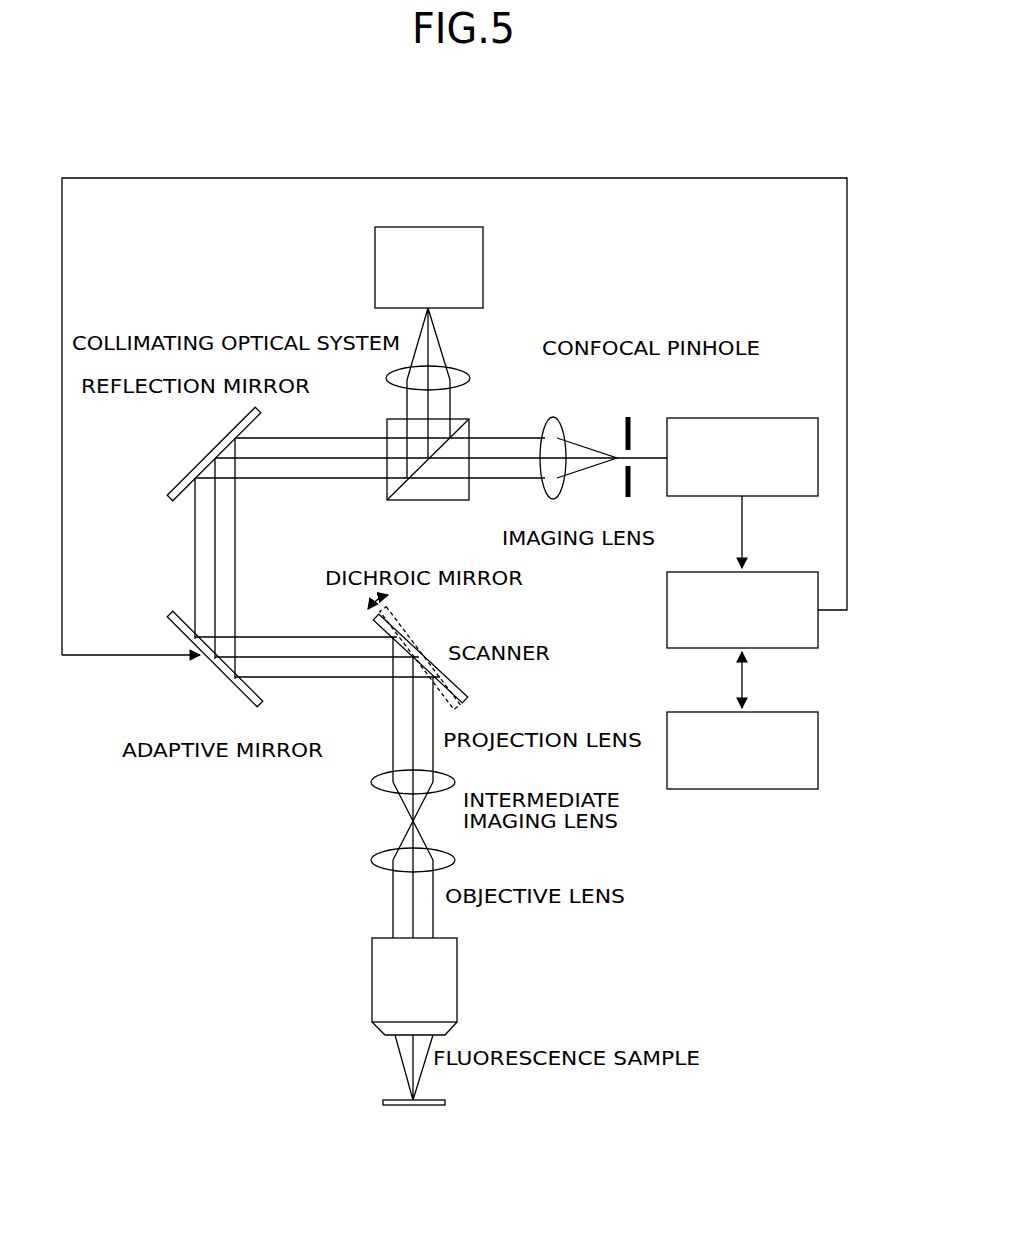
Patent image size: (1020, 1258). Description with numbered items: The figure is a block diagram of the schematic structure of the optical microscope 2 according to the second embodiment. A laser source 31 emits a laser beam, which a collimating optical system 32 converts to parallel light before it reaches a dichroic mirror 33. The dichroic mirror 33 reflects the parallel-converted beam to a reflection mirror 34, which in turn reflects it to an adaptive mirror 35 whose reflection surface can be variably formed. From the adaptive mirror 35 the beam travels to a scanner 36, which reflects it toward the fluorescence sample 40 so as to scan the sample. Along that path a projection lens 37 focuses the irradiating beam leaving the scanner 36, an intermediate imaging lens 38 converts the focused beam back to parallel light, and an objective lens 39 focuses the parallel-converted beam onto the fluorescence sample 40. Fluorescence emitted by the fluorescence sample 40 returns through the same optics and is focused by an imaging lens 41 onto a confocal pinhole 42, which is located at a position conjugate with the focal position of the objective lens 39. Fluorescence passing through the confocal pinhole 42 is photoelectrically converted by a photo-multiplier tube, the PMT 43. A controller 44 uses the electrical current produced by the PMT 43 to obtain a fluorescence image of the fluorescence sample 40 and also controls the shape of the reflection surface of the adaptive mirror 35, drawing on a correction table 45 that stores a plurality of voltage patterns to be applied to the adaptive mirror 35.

The optical microscope 2 is at (503, 134).
The laser source 31 is at (452, 227).
The collimating optical system 32 is at (388, 378).
The dichroic mirror 33 is at (392, 500).
The reflection mirror 34 is at (222, 432).
The adaptive mirror 35 is at (240, 699).
The scanner 36 is at (468, 690).
The projection lens 37 is at (455, 781).
The intermediate imaging lens 38 is at (460, 860).
The objective lens 39 is at (450, 938).
The fluorescence sample 40 is at (440, 1100).
The imaging lens 41 is at (556, 499).
The confocal pinhole 42 is at (628, 415).
The photo-multiplier tube (PMT) 43 is at (768, 418).
The controller 44 is at (768, 572).
The correction table 45 is at (768, 712).